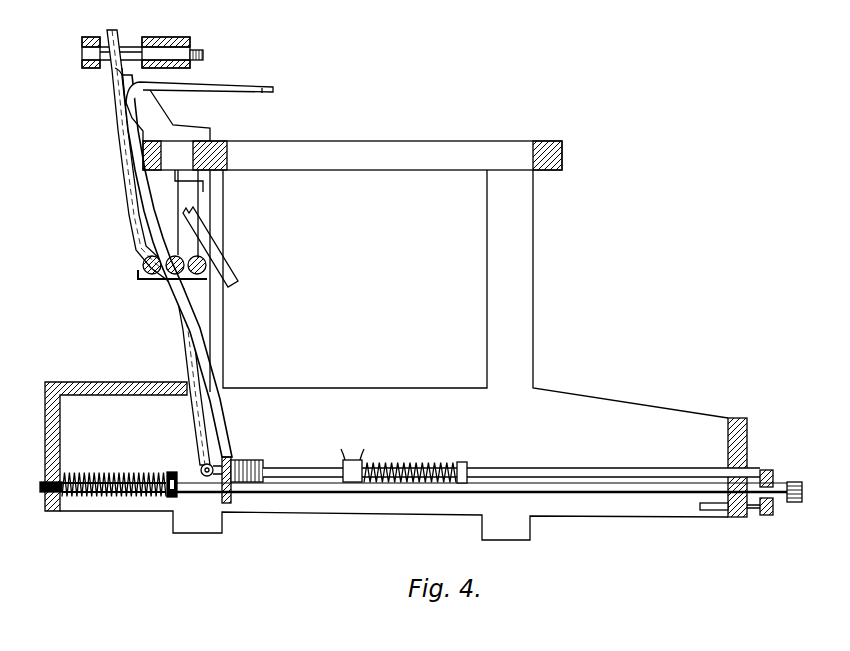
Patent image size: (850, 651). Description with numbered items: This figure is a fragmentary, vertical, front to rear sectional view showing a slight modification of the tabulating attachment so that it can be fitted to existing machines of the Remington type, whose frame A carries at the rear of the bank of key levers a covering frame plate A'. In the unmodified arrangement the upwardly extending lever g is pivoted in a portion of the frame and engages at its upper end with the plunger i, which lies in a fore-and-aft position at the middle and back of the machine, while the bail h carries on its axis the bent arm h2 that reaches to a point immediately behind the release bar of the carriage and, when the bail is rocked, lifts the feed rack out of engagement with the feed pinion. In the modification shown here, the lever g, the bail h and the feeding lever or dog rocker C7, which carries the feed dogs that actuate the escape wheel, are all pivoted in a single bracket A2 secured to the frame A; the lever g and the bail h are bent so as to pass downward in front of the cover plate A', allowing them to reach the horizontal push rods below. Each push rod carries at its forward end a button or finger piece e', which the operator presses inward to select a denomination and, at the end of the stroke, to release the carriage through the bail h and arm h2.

The plunger i is at (170, 53).
The bent arm h2 is at (199, 83).
The bracket A2 is at (205, 216).
The pivoted arm or dog rocker C7 is at (200, 245).
The lever g is at (170, 303).
The frame plate A' is at (116, 434).
The bail h is at (198, 415).
The frame A is at (403, 304).
The button, key or finger piece e' is at (434, 484).